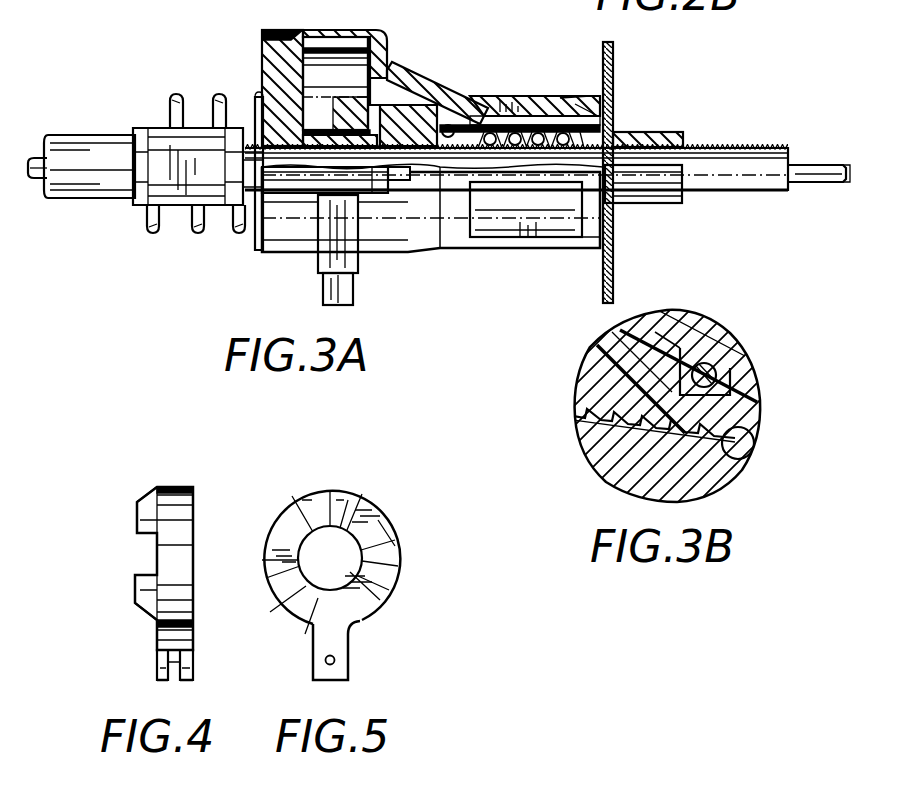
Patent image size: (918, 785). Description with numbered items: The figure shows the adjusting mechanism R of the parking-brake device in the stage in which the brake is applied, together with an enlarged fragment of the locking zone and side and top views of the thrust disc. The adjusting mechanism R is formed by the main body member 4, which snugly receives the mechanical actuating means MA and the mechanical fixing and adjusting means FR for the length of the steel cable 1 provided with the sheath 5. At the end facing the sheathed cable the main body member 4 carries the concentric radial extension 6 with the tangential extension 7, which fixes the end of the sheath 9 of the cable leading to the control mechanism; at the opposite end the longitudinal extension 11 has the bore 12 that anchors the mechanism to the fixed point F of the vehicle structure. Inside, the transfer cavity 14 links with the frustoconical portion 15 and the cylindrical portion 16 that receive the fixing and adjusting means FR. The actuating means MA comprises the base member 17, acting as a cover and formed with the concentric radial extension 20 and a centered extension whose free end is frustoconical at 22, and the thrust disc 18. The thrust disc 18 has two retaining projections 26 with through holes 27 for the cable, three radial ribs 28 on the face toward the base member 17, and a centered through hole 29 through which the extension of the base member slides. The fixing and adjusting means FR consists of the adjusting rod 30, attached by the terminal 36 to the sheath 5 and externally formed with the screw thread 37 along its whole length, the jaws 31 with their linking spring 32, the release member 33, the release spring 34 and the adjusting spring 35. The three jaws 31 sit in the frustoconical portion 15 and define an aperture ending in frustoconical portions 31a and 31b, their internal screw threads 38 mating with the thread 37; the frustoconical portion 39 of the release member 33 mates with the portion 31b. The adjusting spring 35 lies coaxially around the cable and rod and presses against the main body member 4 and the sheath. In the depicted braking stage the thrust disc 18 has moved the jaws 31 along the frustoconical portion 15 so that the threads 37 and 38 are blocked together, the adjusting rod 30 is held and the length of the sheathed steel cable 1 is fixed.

In FIG. 3A, the steel cable 1 is at (827, 165).
In FIG. 3A, the main body member 4 is at (545, 248).
In FIG. 3A, the sheath 5 is at (100, 135).
In FIG. 3A, the concentric radial extension 6 is at (388, 32).
In FIG. 3A, the tangential extension 7 is at (330, 258).
In FIG. 3A, the sheath 9 is at (353, 290).
In FIG. 3A, the longitudinal extension 11 is at (636, 132).
In FIG. 3A, the bore 12 is at (675, 132).
In FIG. 3A, the transfer cavity 14 is at (320, 55).
In FIG. 3A, the frustoconical portion 15 is at (410, 106).
In FIG. 3A, the cylindrical portion 16 is at (534, 100).
In FIG. 3A, the base member 17 is at (262, 66).
In FIG. 3A, the thrust disc 18 is at (340, 62).
In FIG. 4, the thrust disc 18 is at (193, 507).
In FIG. 5, the thrust disc 18 is at (382, 528).
In FIG. 3A, the concentric radial extension 20 is at (262, 34).
In FIG. 3A, the frustoconical free end 22 is at (259, 250).
In FIG. 4, the retaining projections 26 is at (157, 676).
In FIG. 5, the retaining projections 26 is at (348, 678).
In FIG. 4, the through holes 27 is at (160, 655).
In FIG. 5, the through holes 27 is at (335, 654).
In FIG. 4, the radial ribs 28 is at (135, 585).
In FIG. 5, the radial ribs 28 is at (320, 495).
In FIG. 5, the centered through hole 29 is at (350, 514).
In FIG. 3A, the adjusting rod 30 is at (752, 193).
In FIG. 3B, the adjusting rod 30 is at (607, 472).
In FIG. 3A, the jaws 31 is at (395, 105).
In FIG. 3B, the jaws 31 is at (748, 398).
In FIG. 3A, the frustoconical portion 31a is at (374, 176).
In FIG. 3A, the frustoconical portion 31b is at (466, 100).
In FIG. 3A, the linking spring 32 is at (449, 124).
In FIG. 3B, the linking spring 32 is at (712, 368).
In FIG. 3A, the release member 33 is at (488, 182).
In FIG. 3A, the release spring 34 is at (578, 108).
In FIG. 3A, the adjusting spring 35 is at (150, 229).
In FIG. 3A, the terminal 36 is at (175, 205).
In FIG. 3A, the screw thread 37 is at (736, 146).
In FIG. 3B, the screw thread 37 is at (748, 456).
In FIG. 3B, the screw threads 38 is at (745, 430).
In FIG. 3A, the frustoconical portion 39 is at (515, 132).
In FIG. 3A, the fixed point F is at (611, 72).
In FIG. 3A, the mechanical fixing and adjusting means FR is at (502, 38).
In FIG. 3A, the mechanical actuating means MA is at (252, 46).
In FIG. 3A, the adjusting mechanism R is at (443, 248).